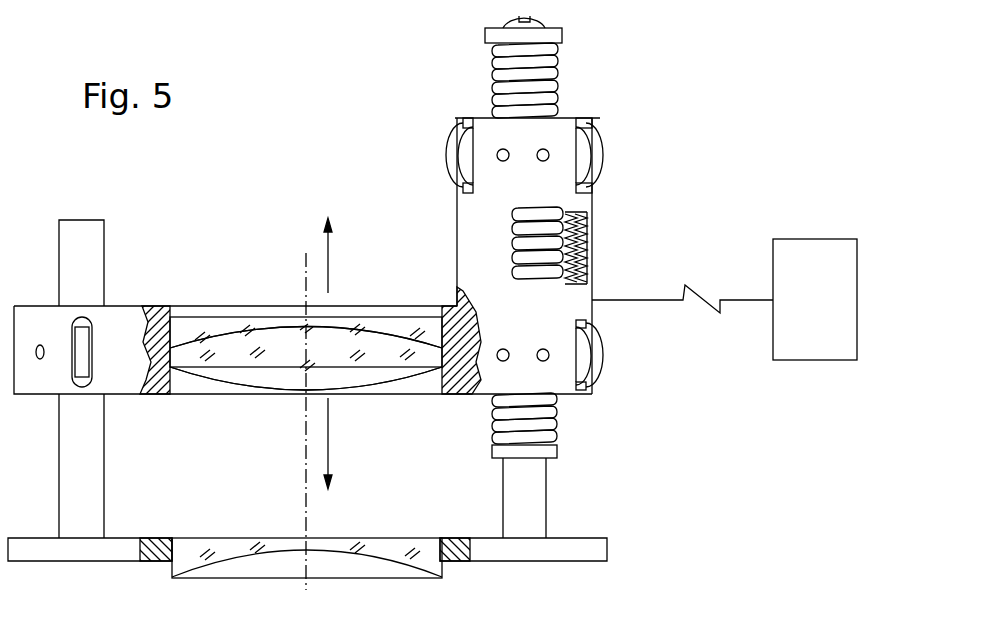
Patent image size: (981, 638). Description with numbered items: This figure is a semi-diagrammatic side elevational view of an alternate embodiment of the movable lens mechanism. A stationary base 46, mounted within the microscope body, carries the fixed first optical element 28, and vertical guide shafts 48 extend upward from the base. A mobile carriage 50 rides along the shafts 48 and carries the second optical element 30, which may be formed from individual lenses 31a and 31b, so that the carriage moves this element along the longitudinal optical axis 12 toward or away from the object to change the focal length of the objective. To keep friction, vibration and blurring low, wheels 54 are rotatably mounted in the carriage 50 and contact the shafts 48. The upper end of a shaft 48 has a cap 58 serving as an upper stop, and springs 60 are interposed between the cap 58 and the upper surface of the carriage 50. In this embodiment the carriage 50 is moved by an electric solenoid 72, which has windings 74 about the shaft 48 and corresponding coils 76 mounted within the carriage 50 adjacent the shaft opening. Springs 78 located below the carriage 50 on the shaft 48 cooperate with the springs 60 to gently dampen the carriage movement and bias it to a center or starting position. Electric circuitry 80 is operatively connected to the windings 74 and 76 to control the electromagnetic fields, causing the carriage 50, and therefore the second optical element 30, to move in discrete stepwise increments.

The longitudinal optical axis 12 is at (310, 567).
The first optical element 28 is at (183, 540).
The second optical element 30 is at (225, 305).
The individual lens 31a is at (192, 325).
The individual lens 31b is at (250, 375).
The stationary base 46 is at (33, 552).
The guide shafts 48 is at (72, 233).
The mobile carriage 50 is at (500, 250).
The wheels 54 is at (450, 154).
The cap 58 is at (557, 34).
The springs 60 is at (497, 69).
The electric solenoid 72 is at (645, 175).
The windings 74 is at (593, 242).
The windings or coils 76 is at (593, 232).
The springs 78 is at (500, 430).
The electric circuitry 80 is at (830, 284).